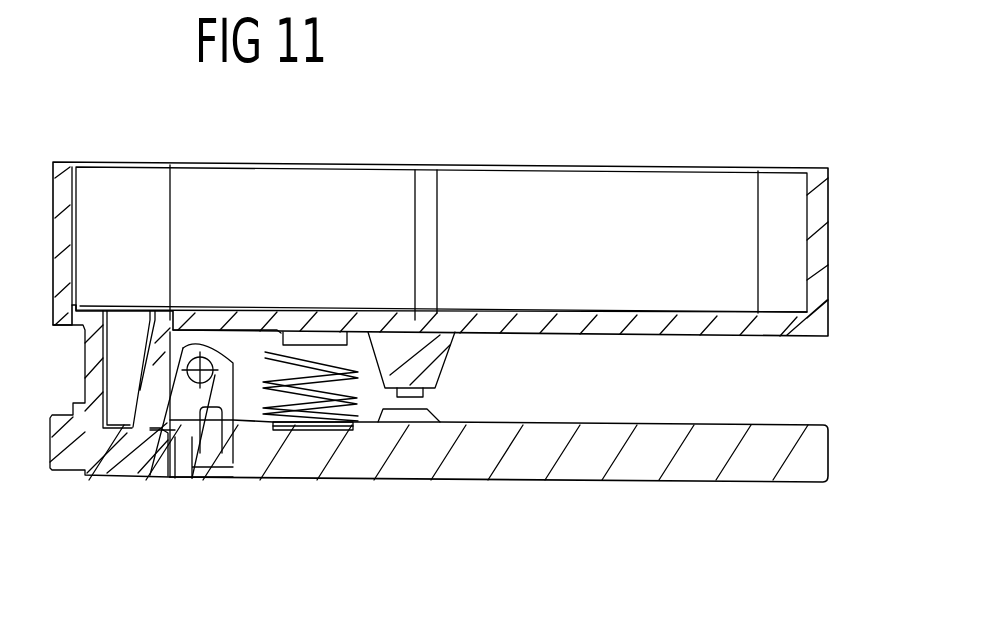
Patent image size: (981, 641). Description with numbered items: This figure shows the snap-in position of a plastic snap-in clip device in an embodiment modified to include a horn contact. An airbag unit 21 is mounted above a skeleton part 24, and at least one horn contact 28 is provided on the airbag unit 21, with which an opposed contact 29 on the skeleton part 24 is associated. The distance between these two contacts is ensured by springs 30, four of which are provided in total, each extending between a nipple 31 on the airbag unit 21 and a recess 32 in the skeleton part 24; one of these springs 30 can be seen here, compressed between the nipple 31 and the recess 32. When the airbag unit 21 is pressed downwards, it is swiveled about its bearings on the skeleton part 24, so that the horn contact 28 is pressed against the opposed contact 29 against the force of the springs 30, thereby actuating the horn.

The airbag unit 21 is at (818, 203).
The skeleton part 24 is at (442, 452).
The horn contact 28 is at (433, 367).
The opposed contact 29 is at (395, 413).
The spring 30 is at (293, 387).
The nipple 31 is at (318, 335).
The recess 32 is at (312, 425).